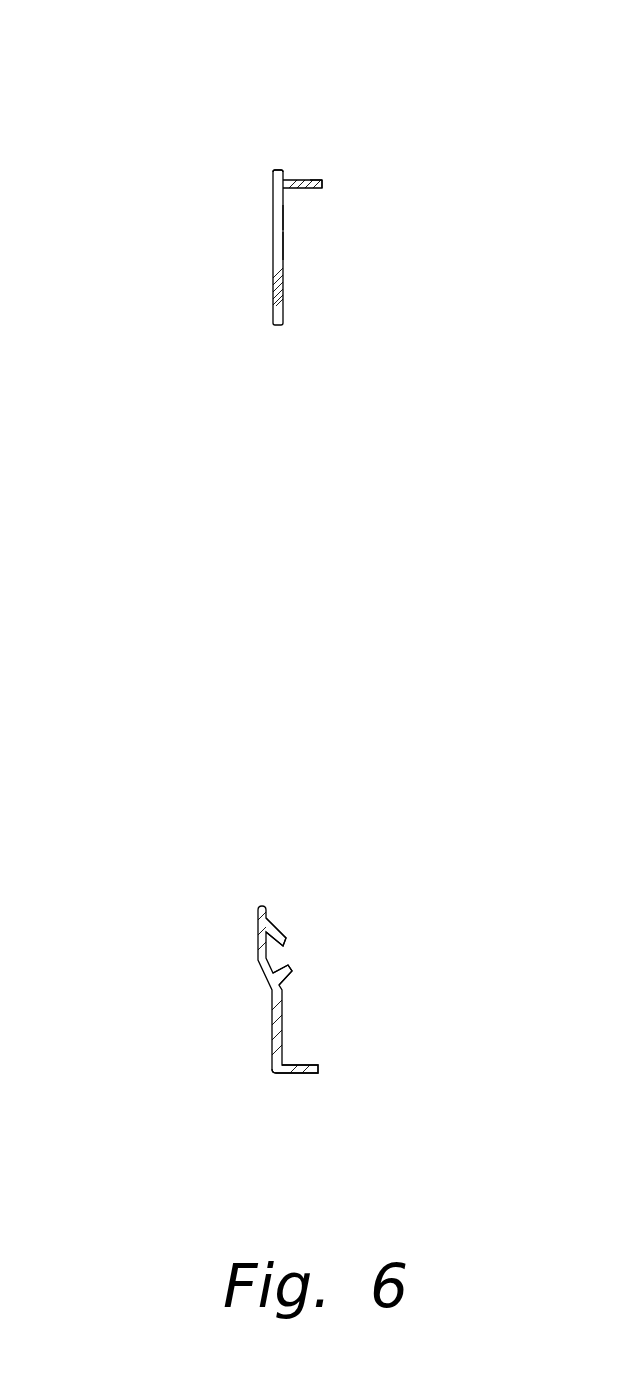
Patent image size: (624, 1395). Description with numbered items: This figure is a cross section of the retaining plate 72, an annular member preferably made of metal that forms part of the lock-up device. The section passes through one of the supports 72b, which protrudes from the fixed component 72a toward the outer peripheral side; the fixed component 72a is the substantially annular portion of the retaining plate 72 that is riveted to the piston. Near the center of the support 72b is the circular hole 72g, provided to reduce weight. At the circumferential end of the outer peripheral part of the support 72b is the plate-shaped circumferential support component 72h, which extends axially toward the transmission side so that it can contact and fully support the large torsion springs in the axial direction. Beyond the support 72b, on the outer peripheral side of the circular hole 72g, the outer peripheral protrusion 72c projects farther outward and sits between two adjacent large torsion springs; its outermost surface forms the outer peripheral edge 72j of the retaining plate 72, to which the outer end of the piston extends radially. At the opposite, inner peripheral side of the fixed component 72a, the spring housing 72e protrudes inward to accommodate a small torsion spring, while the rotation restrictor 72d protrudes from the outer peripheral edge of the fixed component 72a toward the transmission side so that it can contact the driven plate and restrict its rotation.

The retaining plate 72 is at (250, 293).
The fixed component 72a is at (287, 302).
The support 72b is at (322, 214).
The outer peripheral protrusion 72c is at (284, 180).
The rotation restrictor 72d is at (307, 1064).
The spring housing 72e is at (312, 950).
The circular hole 72g is at (306, 240).
The circumferential support component 72h is at (310, 179).
The outer peripheral edge 72j is at (274, 172).